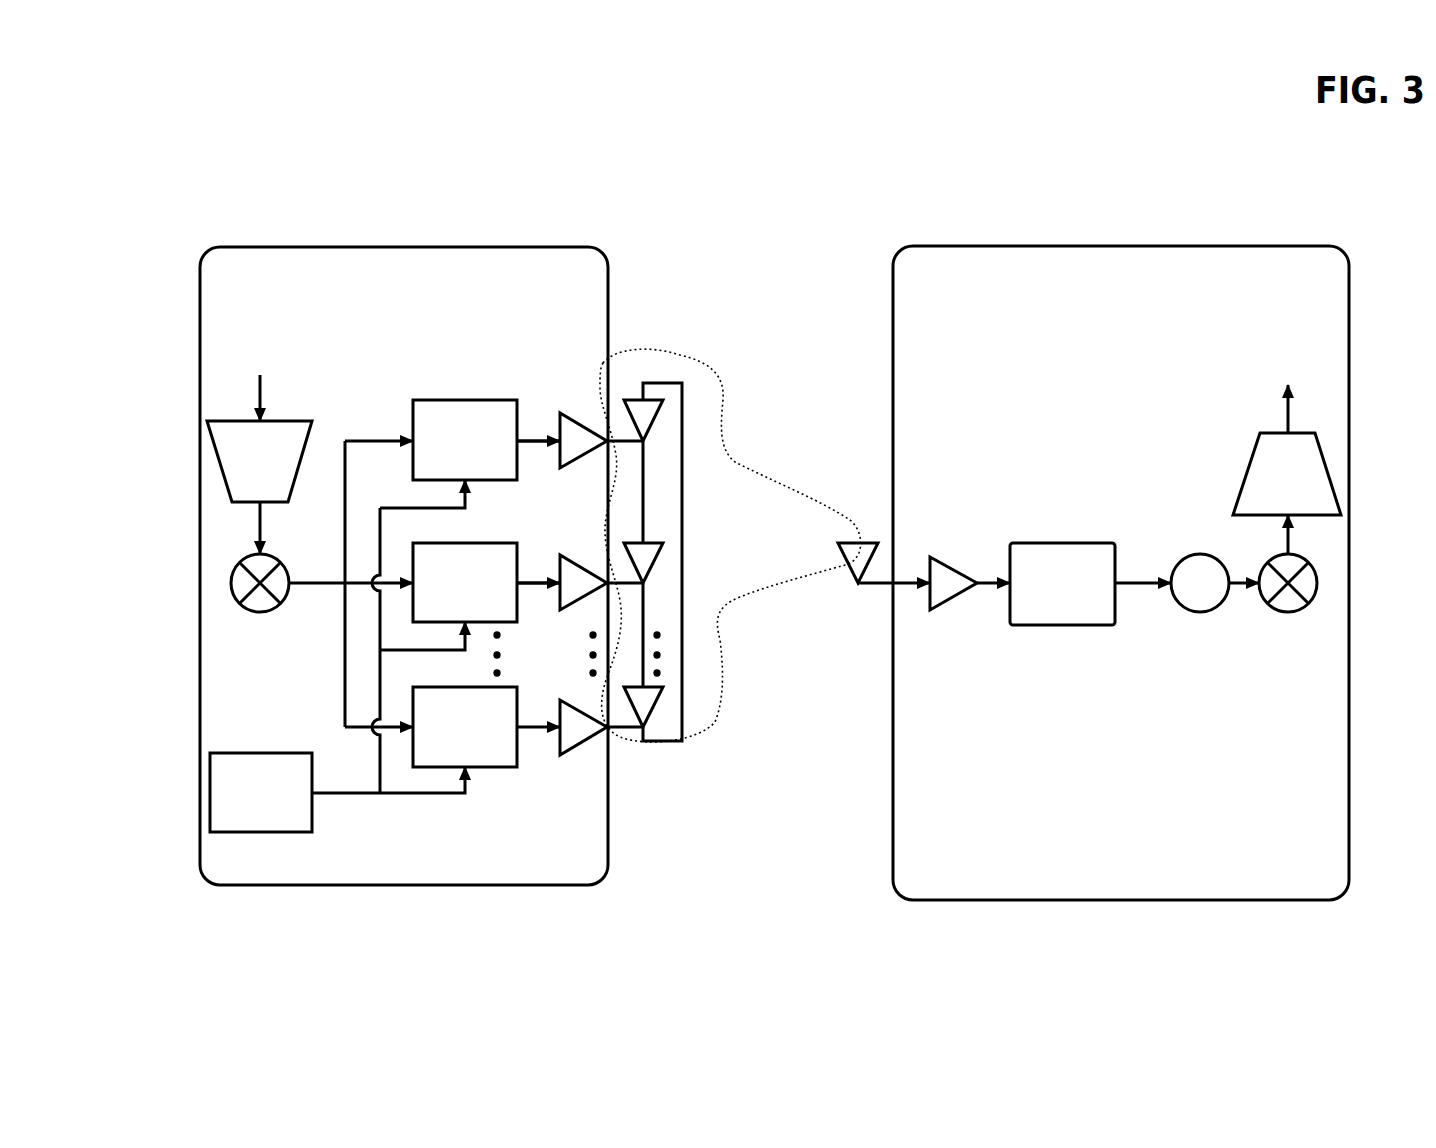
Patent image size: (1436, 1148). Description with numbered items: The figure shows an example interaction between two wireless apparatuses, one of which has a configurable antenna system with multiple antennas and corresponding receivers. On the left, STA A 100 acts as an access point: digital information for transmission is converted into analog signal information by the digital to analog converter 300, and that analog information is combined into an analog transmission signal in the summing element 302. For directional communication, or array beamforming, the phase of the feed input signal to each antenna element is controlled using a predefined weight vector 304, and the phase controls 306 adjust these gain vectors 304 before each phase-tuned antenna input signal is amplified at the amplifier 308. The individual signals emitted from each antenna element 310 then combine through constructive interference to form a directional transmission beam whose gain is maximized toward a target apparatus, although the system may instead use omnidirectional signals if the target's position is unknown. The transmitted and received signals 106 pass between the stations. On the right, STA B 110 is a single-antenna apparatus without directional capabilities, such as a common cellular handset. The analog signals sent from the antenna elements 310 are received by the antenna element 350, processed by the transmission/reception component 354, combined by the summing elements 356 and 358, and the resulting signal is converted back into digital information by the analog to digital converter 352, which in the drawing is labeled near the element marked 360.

The STA A 100 is at (200, 378).
The STA B 110 is at (1351, 372).
The signals 106 is at (746, 388).
The digital to analog converter (D/A) 300 is at (307, 420).
The summing element 302 is at (288, 606).
The weight vector 304 is at (412, 420).
The phase controls 306 is at (315, 835).
The amplifier 308 is at (565, 760).
The antenna elements 310 is at (653, 521).
The antenna element 350 is at (842, 556).
The analog to digital converter (A/D) 352 is at (945, 608).
The transmission/reception component 354 is at (1062, 628).
The summing element 356 is at (1222, 610).
The summing element 358 is at (1310, 565).
The analog-to-digital converter 360 is at (1335, 483).